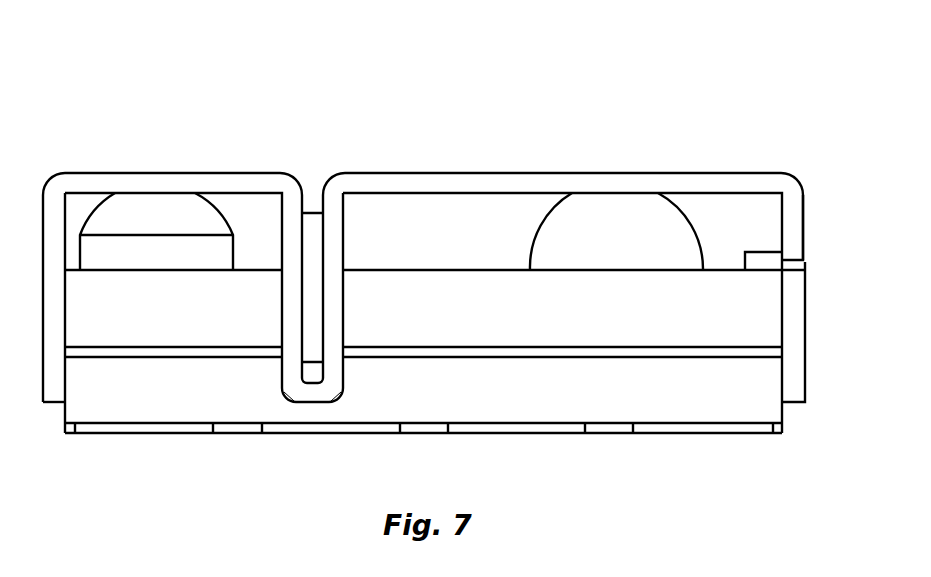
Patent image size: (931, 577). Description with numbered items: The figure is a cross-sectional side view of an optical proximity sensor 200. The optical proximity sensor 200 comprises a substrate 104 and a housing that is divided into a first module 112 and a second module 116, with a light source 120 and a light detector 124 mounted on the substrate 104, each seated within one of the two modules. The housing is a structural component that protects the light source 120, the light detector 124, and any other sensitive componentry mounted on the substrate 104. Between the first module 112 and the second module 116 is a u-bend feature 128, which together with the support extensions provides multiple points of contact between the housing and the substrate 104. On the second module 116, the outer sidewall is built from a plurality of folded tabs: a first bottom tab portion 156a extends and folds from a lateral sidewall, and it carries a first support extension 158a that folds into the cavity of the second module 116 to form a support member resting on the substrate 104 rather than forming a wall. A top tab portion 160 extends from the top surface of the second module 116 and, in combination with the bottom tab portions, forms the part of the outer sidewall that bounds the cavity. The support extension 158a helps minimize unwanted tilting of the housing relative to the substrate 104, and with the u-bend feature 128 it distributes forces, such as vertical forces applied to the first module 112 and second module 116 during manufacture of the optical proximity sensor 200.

The optical proximity sensor 200 is at (121, 111).
The first module 112 is at (248, 172).
The second module 116 is at (520, 172).
The light source 120 is at (113, 227).
The light detector 124 is at (625, 212).
The top tab portion 160 is at (804, 198).
The first support extension 158a is at (760, 258).
The u-bend feature 128 is at (328, 378).
The substrate 104 is at (695, 410).
The first bottom tab portion 156a is at (790, 380).